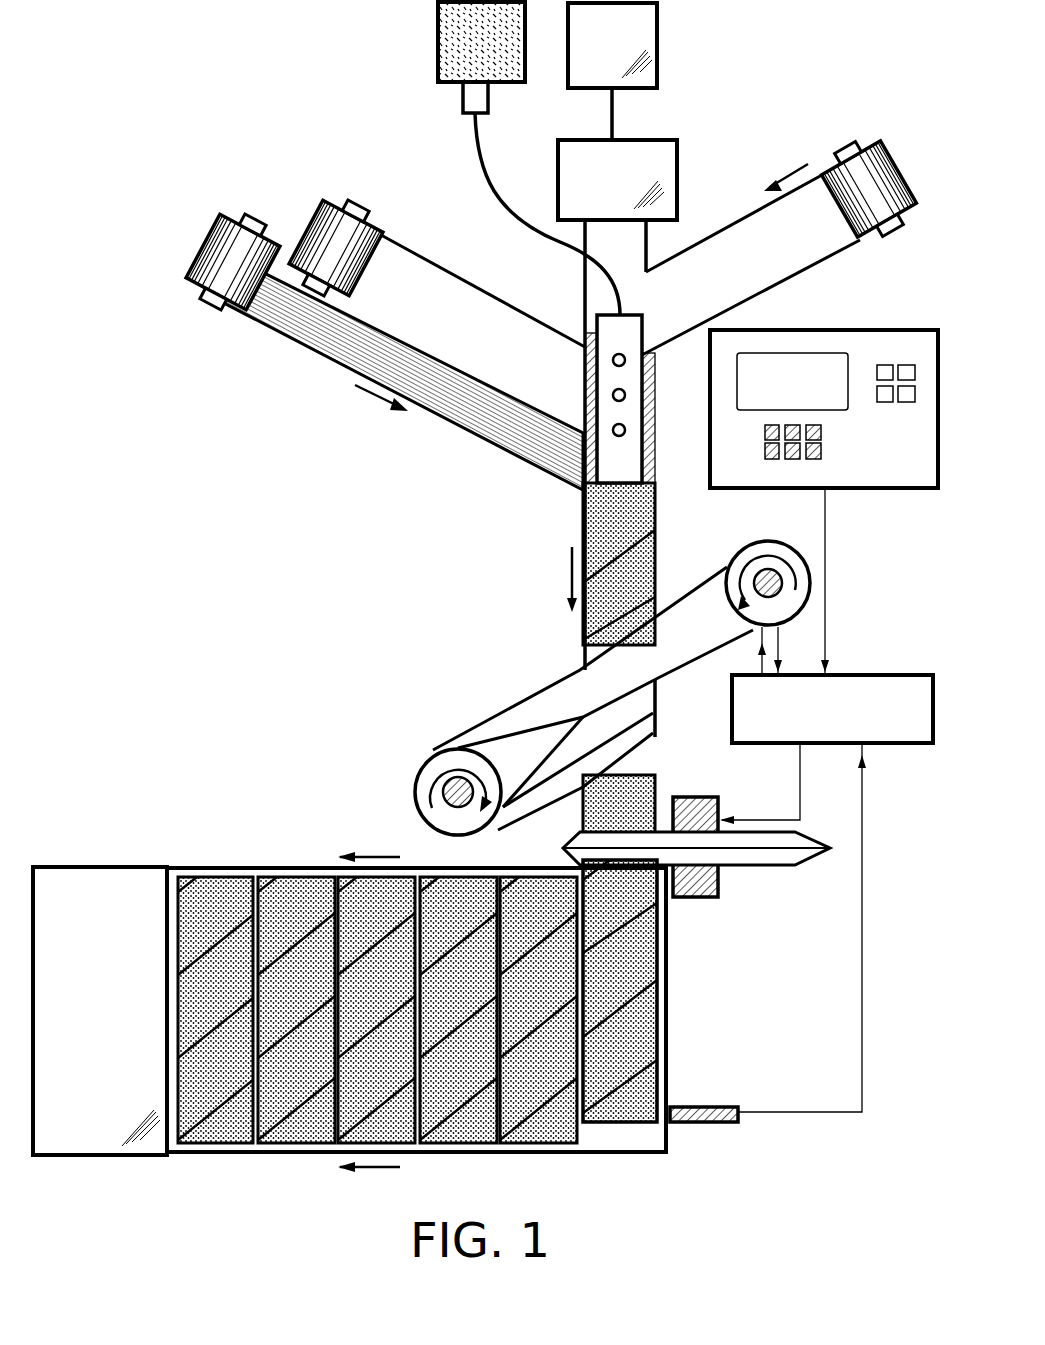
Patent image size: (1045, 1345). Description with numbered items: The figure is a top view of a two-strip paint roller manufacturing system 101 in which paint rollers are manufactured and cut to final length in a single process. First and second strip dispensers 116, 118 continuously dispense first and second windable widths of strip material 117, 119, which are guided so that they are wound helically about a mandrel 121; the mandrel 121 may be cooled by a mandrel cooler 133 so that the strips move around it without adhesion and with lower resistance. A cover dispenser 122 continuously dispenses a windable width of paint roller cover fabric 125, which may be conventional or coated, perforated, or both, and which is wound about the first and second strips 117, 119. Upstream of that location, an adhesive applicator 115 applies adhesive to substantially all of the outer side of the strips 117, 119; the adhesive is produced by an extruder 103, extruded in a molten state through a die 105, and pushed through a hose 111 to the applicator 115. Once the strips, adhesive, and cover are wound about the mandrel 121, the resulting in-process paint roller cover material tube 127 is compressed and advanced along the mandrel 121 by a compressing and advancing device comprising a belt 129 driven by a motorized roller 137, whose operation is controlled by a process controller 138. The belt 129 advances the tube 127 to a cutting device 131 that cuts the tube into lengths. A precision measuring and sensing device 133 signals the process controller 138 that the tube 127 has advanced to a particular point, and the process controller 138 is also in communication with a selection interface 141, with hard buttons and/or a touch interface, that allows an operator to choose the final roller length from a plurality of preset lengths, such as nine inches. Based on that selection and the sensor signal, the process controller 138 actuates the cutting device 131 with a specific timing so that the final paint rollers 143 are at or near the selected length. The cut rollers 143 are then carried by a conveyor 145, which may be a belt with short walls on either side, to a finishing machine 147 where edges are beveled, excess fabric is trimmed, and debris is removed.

The paint roller manufacturing system 101 is at (205, 31).
The extruder 103 is at (437, 20).
The die 105 is at (462, 100).
The hose 111 is at (479, 131).
The mandrel cooler / precision measuring and sensing device 133 is at (658, 50).
The mandrel 121 is at (647, 236).
The first windable strip 117 is at (793, 274).
The first strip dispenser 116 is at (887, 240).
The second windable strip 119 is at (492, 280).
The paint roller cover fabric 125 is at (338, 366).
The cover dispenser 122 is at (256, 212).
The second strip dispenser 118 is at (316, 212).
The adhesive applicator 115 is at (644, 396).
The selection interface 141 is at (908, 490).
The belt 129 is at (505, 700).
The motorized roller 137 is at (765, 537).
The in-process paint roller cover material tube 127 is at (580, 818).
The process controller 138 is at (826, 800).
The cutting device 131 is at (690, 900).
The finishing machine 147 is at (82, 867).
The conveyor 145 is at (478, 868).
The final paint rollers 143 is at (676, 1020).